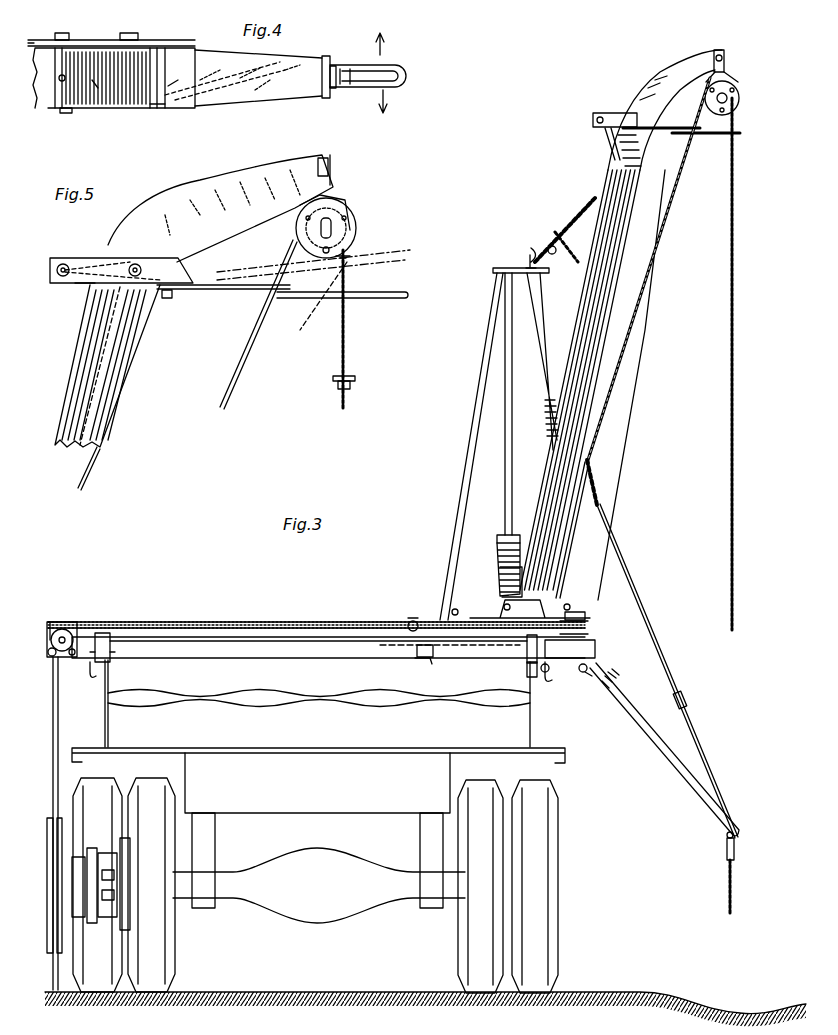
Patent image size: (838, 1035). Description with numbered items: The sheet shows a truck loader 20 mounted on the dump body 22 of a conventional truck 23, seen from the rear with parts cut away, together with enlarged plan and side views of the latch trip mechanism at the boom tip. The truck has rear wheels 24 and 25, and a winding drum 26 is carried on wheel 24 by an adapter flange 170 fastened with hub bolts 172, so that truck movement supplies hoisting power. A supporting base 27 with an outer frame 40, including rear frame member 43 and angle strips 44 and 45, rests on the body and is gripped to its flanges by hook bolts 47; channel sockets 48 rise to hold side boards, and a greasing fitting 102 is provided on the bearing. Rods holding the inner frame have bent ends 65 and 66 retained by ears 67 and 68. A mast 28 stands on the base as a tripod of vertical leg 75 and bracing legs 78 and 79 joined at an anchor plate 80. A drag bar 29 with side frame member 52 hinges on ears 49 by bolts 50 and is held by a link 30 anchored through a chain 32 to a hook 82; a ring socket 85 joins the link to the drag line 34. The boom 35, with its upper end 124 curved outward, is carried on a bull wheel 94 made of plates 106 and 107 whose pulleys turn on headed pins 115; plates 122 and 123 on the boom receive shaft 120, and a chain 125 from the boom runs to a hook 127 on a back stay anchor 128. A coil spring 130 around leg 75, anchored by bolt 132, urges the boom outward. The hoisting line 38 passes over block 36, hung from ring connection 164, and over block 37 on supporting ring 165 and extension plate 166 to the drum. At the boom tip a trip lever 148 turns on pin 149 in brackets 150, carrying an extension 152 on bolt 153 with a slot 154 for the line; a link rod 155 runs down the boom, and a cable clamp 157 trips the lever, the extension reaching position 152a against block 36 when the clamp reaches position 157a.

In FIG. 3, the loader 20 is at (628, 290).
In FIG. 3, the dump body 22 is at (531, 726).
In FIG. 3, the truck 23 is at (352, 820).
In FIG. 3, the rear wheel 24 is at (176, 950).
In FIG. 3, the rear wheel 25 is at (559, 950).
In FIG. 3, the winding drum 26 is at (46, 822).
In FIG. 3, the supporting base 27 is at (276, 625).
In FIG. 3, the mast 28 is at (515, 332).
In FIG. 3, the drag bar 29 is at (652, 771).
In FIG. 3, the link 30 is at (648, 628).
In FIG. 3, the chain 32 is at (584, 462).
In FIG. 3, the drag line 34 is at (734, 888).
In FIG. 4, the boom 35 is at (140, 62).
In FIG. 5, the boom 35 is at (118, 416).
In FIG. 3, the boom 35 is at (600, 381).
In FIG. 4, the block 36 is at (352, 86).
In FIG. 5, the block 36 is at (356, 235).
In FIG. 3, the block 36 is at (738, 103).
In FIG. 3, the block 37 is at (72, 623).
In FIG. 5, the hoisting line 38 is at (347, 405).
In FIG. 3, the hoisting line 38 is at (736, 374).
In FIG. 3, the outer frame 40 is at (305, 661).
In FIG. 3, the rear frame member 43 is at (236, 657).
In FIG. 3, the angle strip 44 is at (110, 663).
In FIG. 3, the angle strip 45 is at (527, 670).
In FIG. 3, the hook bolt 47 is at (92, 673).
In FIG. 3, the channel socket 48 is at (110, 650).
In FIG. 3, the ear 49 is at (590, 669).
In FIG. 3, the bolt 50 is at (584, 676).
In FIG. 3, the side frame member 52 is at (636, 724).
In FIG. 3, the angularly disposed end 65 is at (417, 652).
In FIG. 3, the angularly disposed end 66 is at (595, 652).
In FIG. 3, the ear 67 is at (420, 661).
In FIG. 3, the ear 68 is at (551, 670).
In FIG. 3, the vertical leg 75 is at (509, 478).
In FIG. 3, the bracing leg 78 is at (463, 466).
In FIG. 3, the bracing leg 79 is at (563, 560).
In FIG. 3, the anchor plate 80 is at (493, 272).
In FIG. 3, the hook 82 is at (548, 395).
In FIG. 3, the ring socket 85 is at (694, 696).
In FIG. 3, the bull wheel 94 is at (590, 636).
In FIG. 3, the greasing fitting 102 is at (456, 647).
In FIG. 3, the semi-circular plate 106 is at (582, 615).
In FIG. 3, the semi-circular plate 107 is at (590, 622).
In FIG. 3, the headed pin 115 is at (455, 610).
In FIG. 3, the boom support shaft 120 is at (503, 607).
In FIG. 3, the plate 122 is at (545, 603).
In FIG. 3, the plate 123 is at (510, 583).
In FIG. 5, the upper end of boom 124 is at (237, 240).
In FIG. 3, the upper end of boom 124 is at (675, 70).
In FIG. 3, the chain 125 is at (567, 222).
In FIG. 3, the hook 127 is at (550, 250).
In FIG. 3, the back stay anchor 128 is at (528, 262).
In FIG. 3, the coil spring 130 is at (505, 562).
In FIG. 3, the bolt 132 is at (504, 538).
In FIG. 4, the trip lever 148 is at (150, 105).
In FIG. 5, the trip lever 148 is at (113, 262).
In FIG. 3, the trip lever 148 is at (602, 113).
In FIG. 4, the pin 149 is at (62, 80).
In FIG. 5, the pin 149 is at (57, 268).
In FIG. 3, the pin 149 is at (597, 122).
In FIG. 4, the bracket 150 is at (95, 85).
In FIG. 5, the bracket 150 is at (88, 288).
In FIG. 3, the bracket 150 is at (606, 132).
In FIG. 4, the trip lever extension 152 is at (400, 62).
In FIG. 5, the trip lever extension 152 is at (240, 292).
In FIG. 3, the trip lever extension 152 is at (699, 136).
In FIG. 5, the trip lever extension position 152a is at (368, 266).
In FIG. 4, the bolt 153 is at (168, 88).
In FIG. 5, the bolt 153 is at (166, 298).
In FIG. 3, the bolt 153 is at (634, 131).
In FIG. 4, the slot 154 is at (402, 90).
In FIG. 4, the link rod 155 is at (35, 44).
In FIG. 5, the link rod 155 is at (85, 478).
In FIG. 5, the cable clamp 157 is at (357, 383).
In FIG. 5, the cable clamp position 157a is at (318, 300).
In FIG. 4, the ring connection 164 is at (333, 66).
In FIG. 5, the ring connection 164 is at (335, 166).
In FIG. 3, the ring connection 164 is at (727, 62).
In FIG. 3, the supporting ring 165 is at (62, 620).
In FIG. 3, the extension plate 166 is at (49, 620).
In FIG. 3, the adapter flange 170 is at (110, 856).
In FIG. 3, the hub bolt 172 is at (116, 856).